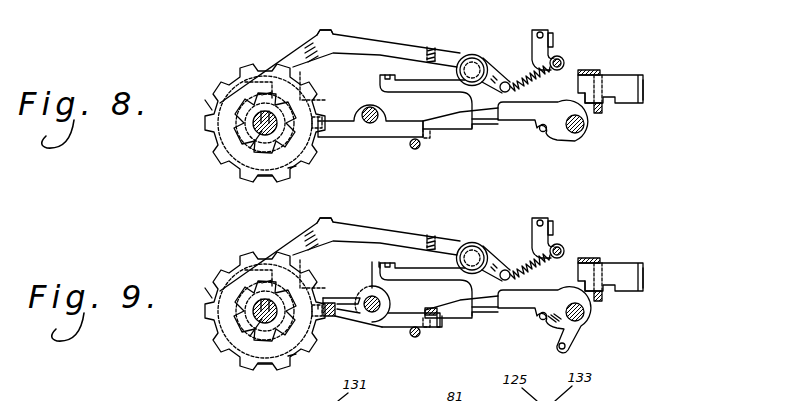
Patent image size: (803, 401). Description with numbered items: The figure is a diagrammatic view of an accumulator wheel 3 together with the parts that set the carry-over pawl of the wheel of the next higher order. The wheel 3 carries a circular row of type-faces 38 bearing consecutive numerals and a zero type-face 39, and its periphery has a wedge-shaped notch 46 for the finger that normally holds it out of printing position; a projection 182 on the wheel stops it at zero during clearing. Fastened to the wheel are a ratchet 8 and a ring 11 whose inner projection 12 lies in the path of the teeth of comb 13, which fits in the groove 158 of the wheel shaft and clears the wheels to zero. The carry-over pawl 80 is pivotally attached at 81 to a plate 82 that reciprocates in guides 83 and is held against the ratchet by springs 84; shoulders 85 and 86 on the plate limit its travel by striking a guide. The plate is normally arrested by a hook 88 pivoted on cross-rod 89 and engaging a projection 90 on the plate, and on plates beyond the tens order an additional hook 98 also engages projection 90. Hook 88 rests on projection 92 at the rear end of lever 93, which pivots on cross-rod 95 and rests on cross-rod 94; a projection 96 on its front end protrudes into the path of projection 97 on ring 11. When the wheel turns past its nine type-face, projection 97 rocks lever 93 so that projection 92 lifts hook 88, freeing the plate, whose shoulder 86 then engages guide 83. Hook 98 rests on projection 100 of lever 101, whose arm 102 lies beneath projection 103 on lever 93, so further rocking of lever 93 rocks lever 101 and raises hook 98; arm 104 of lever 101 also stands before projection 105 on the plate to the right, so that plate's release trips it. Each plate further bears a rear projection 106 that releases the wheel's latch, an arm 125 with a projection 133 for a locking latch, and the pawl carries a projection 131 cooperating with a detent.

In FIG. 8, the accumulator wheel 3 is at (265, 123).
In FIG. 9, the accumulator wheel 3 is at (265, 311).
In FIG. 8, the ratchet 8 is at (240, 131).
In FIG. 9, the ratchet 8 is at (240, 311).
In FIG. 8, the ring 11 is at (255, 105).
In FIG. 9, the ring 11 is at (271, 276).
In FIG. 8, the projection 12 is at (265, 110).
In FIG. 9, the projection 12 is at (265, 276).
In FIG. 8, the comb 13 is at (260, 120).
In FIG. 9, the comb 13 is at (252, 300).
In FIG. 8, the type-faces 38 is at (284, 66).
In FIG. 9, the type-faces 38 is at (247, 315).
In FIG. 8, the zero type-face 39 is at (250, 63).
In FIG. 9, the zero type-face 39 is at (272, 255).
In FIG. 8, the wedge-shaped notch 46 is at (260, 182).
In FIG. 9, the wedge-shaped notch 46 is at (258, 382).
In FIG. 8, the carry-over pawl 80 is at (340, 66).
In FIG. 9, the carry-over pawl 80 is at (340, 254).
In FIG. 8, the pivot 81 is at (468, 54).
In FIG. 9, the pivot 81 is at (484, 242).
In FIG. 8, the plate 82 is at (426, 101).
In FIG. 9, the plate 82 is at (426, 289).
In FIG. 8, the guides 83 is at (599, 70).
In FIG. 9, the guides 83 is at (607, 260).
In FIG. 8, the springs 84 is at (526, 76).
In FIG. 9, the springs 84 is at (531, 251).
In FIG. 8, the shoulder 85 is at (584, 100).
In FIG. 9, the shoulder 85 is at (573, 278).
In FIG. 8, the shoulder 86 is at (613, 102).
In FIG. 9, the shoulder 86 is at (610, 277).
In FIG. 8, the hook 88 is at (460, 116).
In FIG. 9, the hook 88 is at (431, 309).
In FIG. 8, the cross-rod 89 is at (585, 125).
In FIG. 9, the cross-rod 89 is at (597, 312).
In FIG. 8, the projection 90 is at (498, 125).
In FIG. 9, the projection 90 is at (544, 320).
In FIG. 8, the projection 92 is at (431, 132).
In FIG. 9, the projection 92 is at (431, 326).
In FIG. 8, the lever 93 is at (362, 130).
In FIG. 9, the lever 93 is at (340, 297).
In FIG. 8, the cross-rod 94 is at (411, 146).
In FIG. 9, the cross-rod 94 is at (413, 336).
In FIG. 8, the cross-rod 95 is at (380, 112).
In FIG. 9, the cross-rod 95 is at (370, 313).
In FIG. 8, the projection 96 is at (322, 118).
In FIG. 9, the projection 96 is at (323, 281).
In FIG. 8, the projection 97 is at (291, 170).
In FIG. 9, the projection 97 is at (293, 375).
In FIG. 9, the additional hook 98 is at (462, 308).
In FIG. 9, the projection 100 is at (443, 322).
In FIG. 9, the lever 101 is at (402, 327).
In FIG. 9, the arm 102 is at (350, 327).
In FIG. 9, the projection 103 is at (344, 295).
In FIG. 9, the arm 104 is at (393, 235).
In FIG. 8, the projection 105 is at (388, 74).
In FIG. 9, the projection 105 is at (414, 237).
In FIG. 8, the projection 106 is at (644, 90).
In FIG. 9, the projection 106 is at (667, 269).
In FIG. 8, the arm 125 is at (537, 27).
In FIG. 9, the arm 125 is at (530, 221).
In FIG. 8, the projection 131 is at (324, 31).
In FIG. 9, the projection 131 is at (336, 206).
In FIG. 8, the projection 133 is at (554, 33).
In FIG. 9, the projection 133 is at (571, 208).
In FIG. 8, the groove 158 is at (270, 128).
In FIG. 9, the groove 158 is at (240, 350).
In FIG. 8, the projection 182 is at (207, 103).
In FIG. 9, the projection 182 is at (196, 273).